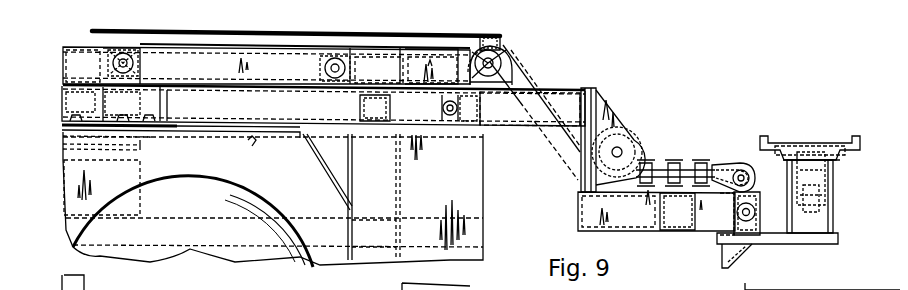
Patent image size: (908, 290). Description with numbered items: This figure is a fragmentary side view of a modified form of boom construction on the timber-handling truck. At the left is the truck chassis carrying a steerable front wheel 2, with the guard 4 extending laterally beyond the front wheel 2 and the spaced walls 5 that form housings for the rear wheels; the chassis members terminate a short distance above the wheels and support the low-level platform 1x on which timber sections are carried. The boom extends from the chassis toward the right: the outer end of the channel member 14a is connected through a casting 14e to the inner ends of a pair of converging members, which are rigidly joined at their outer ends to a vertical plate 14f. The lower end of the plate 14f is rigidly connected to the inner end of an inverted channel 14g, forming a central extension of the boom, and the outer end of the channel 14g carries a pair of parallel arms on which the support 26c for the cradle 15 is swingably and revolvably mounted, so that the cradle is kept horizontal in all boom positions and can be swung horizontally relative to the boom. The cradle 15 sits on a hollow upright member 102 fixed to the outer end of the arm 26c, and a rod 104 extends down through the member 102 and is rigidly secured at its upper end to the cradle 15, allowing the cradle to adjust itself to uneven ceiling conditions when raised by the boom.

The channel member 14a is at (422, 80).
The casting 14e is at (507, 51).
The vertical plate 14f is at (576, 194).
The inverted channel 14g is at (631, 229).
The support 26c is at (784, 244).
The hollow upright member 102 is at (818, 217).
The rod 104 is at (828, 166).
The cradle 15 is at (835, 146).
The guard 4 is at (503, 219).
The spaced walls 5 is at (350, 237).
The front wheels 2 is at (116, 254).
The platform 1x is at (261, 143).